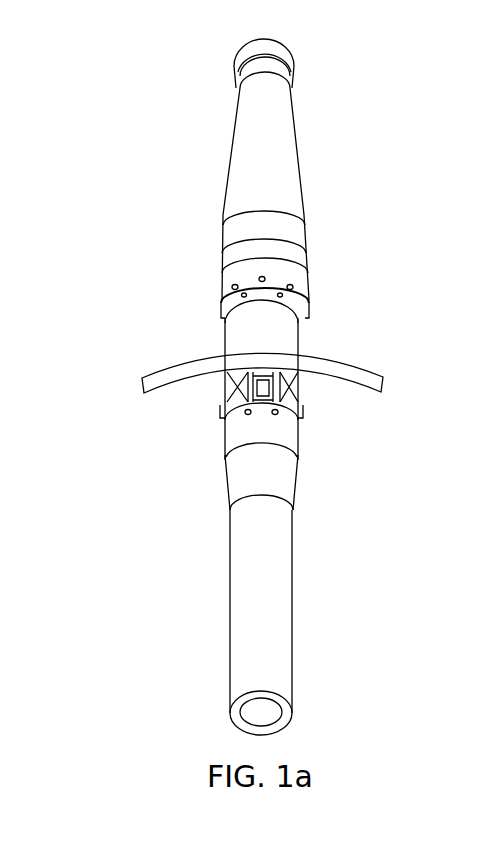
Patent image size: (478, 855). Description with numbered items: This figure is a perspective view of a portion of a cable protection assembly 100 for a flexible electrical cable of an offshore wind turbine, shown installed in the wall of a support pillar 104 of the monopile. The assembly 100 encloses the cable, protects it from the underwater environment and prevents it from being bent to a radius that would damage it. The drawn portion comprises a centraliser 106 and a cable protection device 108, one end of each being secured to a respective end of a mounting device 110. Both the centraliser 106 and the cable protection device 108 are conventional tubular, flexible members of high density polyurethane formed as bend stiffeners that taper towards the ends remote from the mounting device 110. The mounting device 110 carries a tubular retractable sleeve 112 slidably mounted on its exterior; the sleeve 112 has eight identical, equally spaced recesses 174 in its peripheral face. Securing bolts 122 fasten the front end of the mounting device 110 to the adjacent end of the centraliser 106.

The cable protection assembly 100 is at (158, 483).
The support pillar 104 is at (352, 365).
The centraliser 106 is at (275, 567).
The cable protection device 108 is at (283, 168).
The mounting device 110 is at (266, 335).
The tubular retractable sleeve 112 is at (237, 276).
The securing bolt 122 is at (292, 445).
The recesses 174 is at (292, 288).